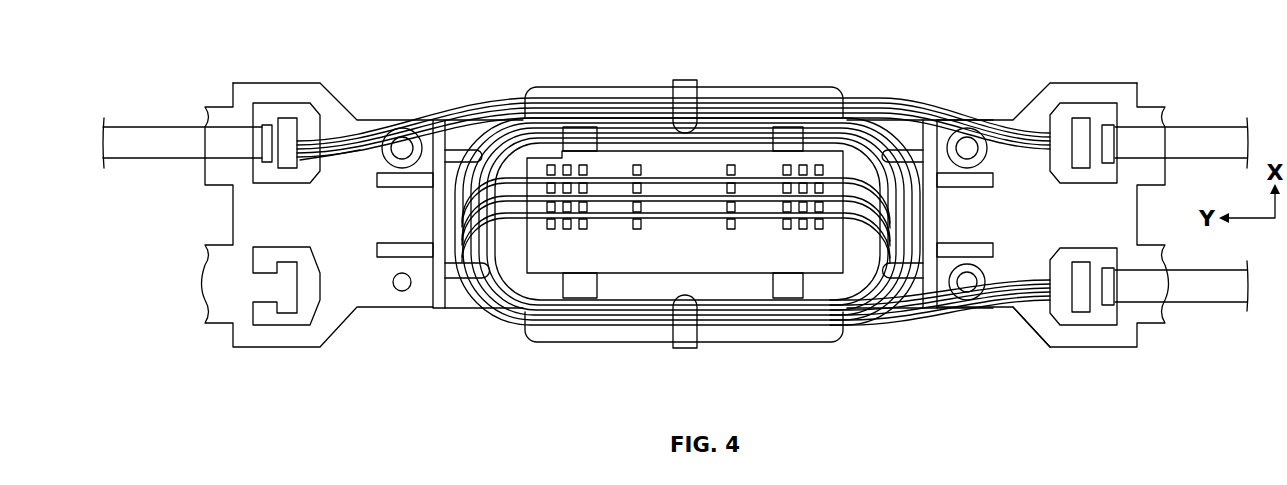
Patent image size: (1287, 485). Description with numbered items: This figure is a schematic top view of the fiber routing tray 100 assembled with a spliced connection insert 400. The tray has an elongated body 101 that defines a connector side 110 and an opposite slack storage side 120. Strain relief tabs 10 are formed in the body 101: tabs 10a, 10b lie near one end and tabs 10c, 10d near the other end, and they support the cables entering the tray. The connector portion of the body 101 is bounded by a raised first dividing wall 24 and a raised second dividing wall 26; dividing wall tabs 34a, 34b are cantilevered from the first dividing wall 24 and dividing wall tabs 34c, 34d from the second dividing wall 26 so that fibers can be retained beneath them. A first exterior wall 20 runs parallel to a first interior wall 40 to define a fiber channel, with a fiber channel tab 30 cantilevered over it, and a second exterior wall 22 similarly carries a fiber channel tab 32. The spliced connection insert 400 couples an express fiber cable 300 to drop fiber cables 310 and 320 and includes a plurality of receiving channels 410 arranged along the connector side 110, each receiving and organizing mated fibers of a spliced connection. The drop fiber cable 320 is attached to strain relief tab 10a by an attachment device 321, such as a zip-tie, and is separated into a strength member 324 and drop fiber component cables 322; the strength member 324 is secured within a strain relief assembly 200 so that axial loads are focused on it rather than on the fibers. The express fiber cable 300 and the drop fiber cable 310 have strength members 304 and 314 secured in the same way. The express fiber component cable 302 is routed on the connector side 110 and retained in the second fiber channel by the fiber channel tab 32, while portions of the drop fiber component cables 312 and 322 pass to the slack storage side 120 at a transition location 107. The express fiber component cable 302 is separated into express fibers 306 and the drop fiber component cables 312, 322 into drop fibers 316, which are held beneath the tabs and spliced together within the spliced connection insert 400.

The strain relief tab 10 is at (1094, 296).
The strain relief tab 10a is at (1099, 324).
The strain relief tab 10b is at (1083, 122).
The strain relief tab 10c is at (287, 126).
The strain relief tab 10d is at (288, 303).
The first exterior wall 20 is at (547, 337).
The second exterior wall 22 is at (563, 92).
The first dividing wall 24 is at (930, 305).
The second dividing wall 26 is at (438, 303).
The fiber channel tab 30 is at (685, 340).
The fiber channel tab 32 is at (686, 96).
The dividing wall tab 34a is at (903, 156).
The dividing wall tab 34b is at (903, 270).
The dividing wall tab 34c is at (477, 272).
The dividing wall tab 34d is at (470, 156).
The first interior wall 40 is at (628, 275).
The fiber routing tray 100 is at (1060, 26).
The body 101 is at (327, 308).
The transition location 107 is at (905, 403).
The connector side 110 is at (905, 39).
The slack storage side 120 is at (956, 301).
The strain relief assembly 200 is at (993, 141).
The express fiber cable 300 is at (145, 153).
The express fiber component cable 302 is at (403, 120).
The strength member 304 is at (347, 160).
The express fibers 306 is at (503, 310).
The drop fiber cable 310 is at (1224, 92).
The drop fiber component cable 312 is at (971, 120).
The strength member 314 is at (1020, 155).
The drop fibers 316 is at (850, 317).
The drop fiber cable 320 is at (1203, 341).
The attachment device 321 is at (1107, 298).
The drop fiber component cable 322 is at (1007, 303).
The strength member 324 is at (1014, 280).
The spliced connection insert 400 is at (756, 242).
The receiving channels 410 is at (600, 180).